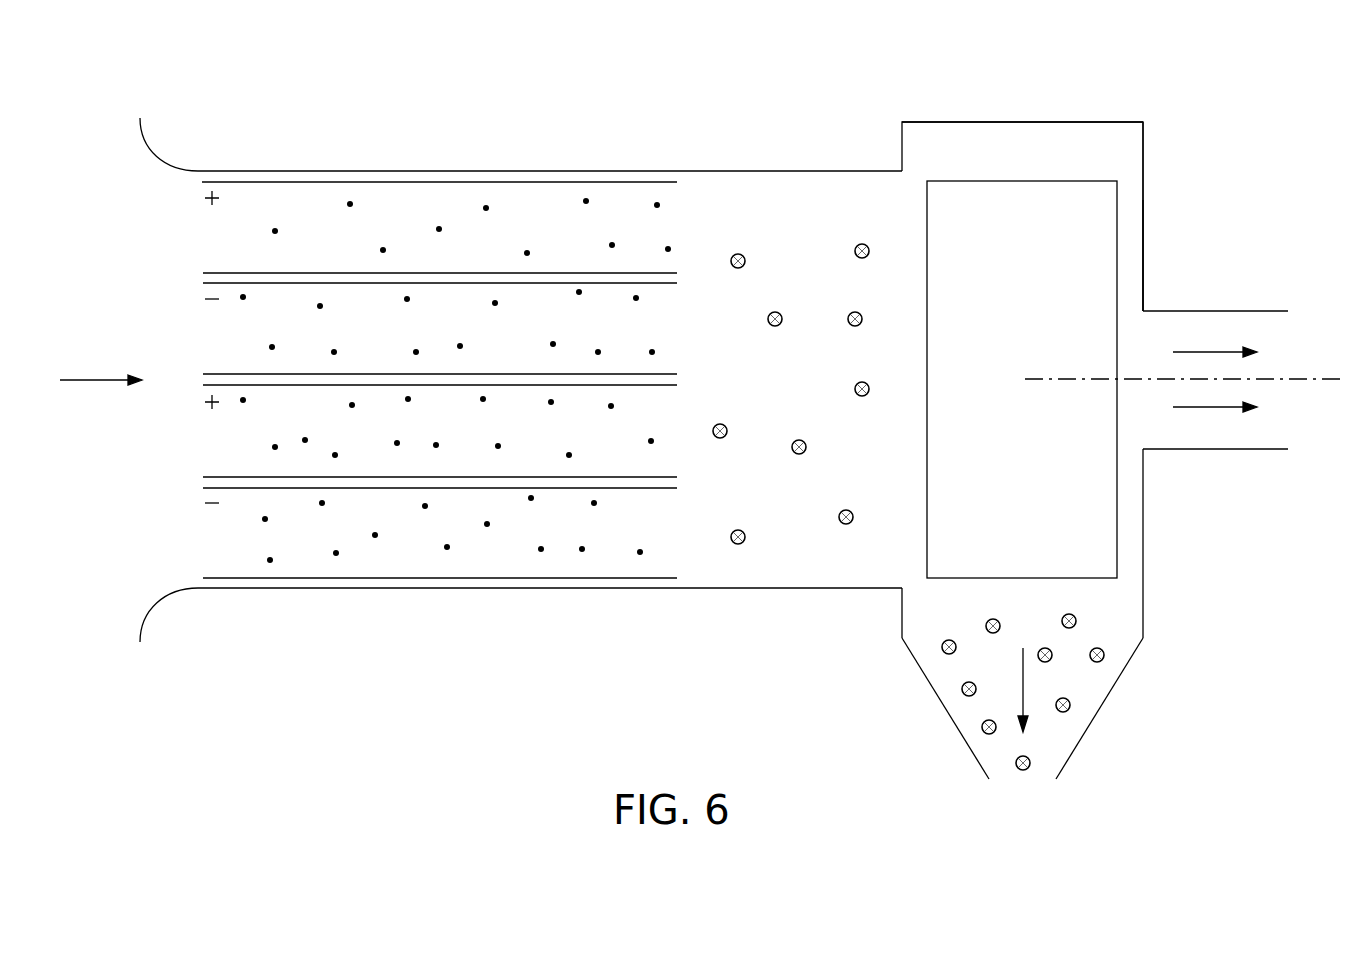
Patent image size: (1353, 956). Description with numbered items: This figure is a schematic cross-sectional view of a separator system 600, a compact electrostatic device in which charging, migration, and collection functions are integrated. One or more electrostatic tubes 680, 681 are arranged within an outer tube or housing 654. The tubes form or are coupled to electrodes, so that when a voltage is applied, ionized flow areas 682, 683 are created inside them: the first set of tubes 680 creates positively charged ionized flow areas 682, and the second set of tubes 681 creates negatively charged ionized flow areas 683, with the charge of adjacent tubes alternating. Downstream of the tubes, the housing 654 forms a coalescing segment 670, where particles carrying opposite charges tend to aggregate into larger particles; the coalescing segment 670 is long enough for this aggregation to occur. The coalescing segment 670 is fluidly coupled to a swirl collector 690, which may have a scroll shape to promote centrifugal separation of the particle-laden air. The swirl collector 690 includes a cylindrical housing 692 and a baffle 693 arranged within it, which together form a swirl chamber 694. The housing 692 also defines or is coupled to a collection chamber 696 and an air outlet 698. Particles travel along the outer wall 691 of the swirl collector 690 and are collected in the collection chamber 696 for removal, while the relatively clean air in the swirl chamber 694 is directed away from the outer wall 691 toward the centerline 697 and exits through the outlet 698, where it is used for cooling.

The separator system 600 is at (412, 113).
The housing 654 is at (237, 171).
The coalescing segment 670 is at (802, 205).
The first set of electrostatic tubes 680 is at (245, 273).
The second set of electrostatic tubes 681 is at (245, 374).
The positively charged ionized flow area 682 is at (228, 222).
The negatively charged ionized flow area 683 is at (228, 326).
The swirl collector 690 is at (932, 130).
The outer wall 691 is at (1072, 122).
The cylindrical housing 692 is at (1143, 163).
The baffle 693 is at (1028, 195).
The swirl chamber 694 is at (1133, 222).
The collection chamber 696 is at (1093, 687).
The centerline 697 is at (1300, 380).
The air outlet 698 is at (1248, 451).